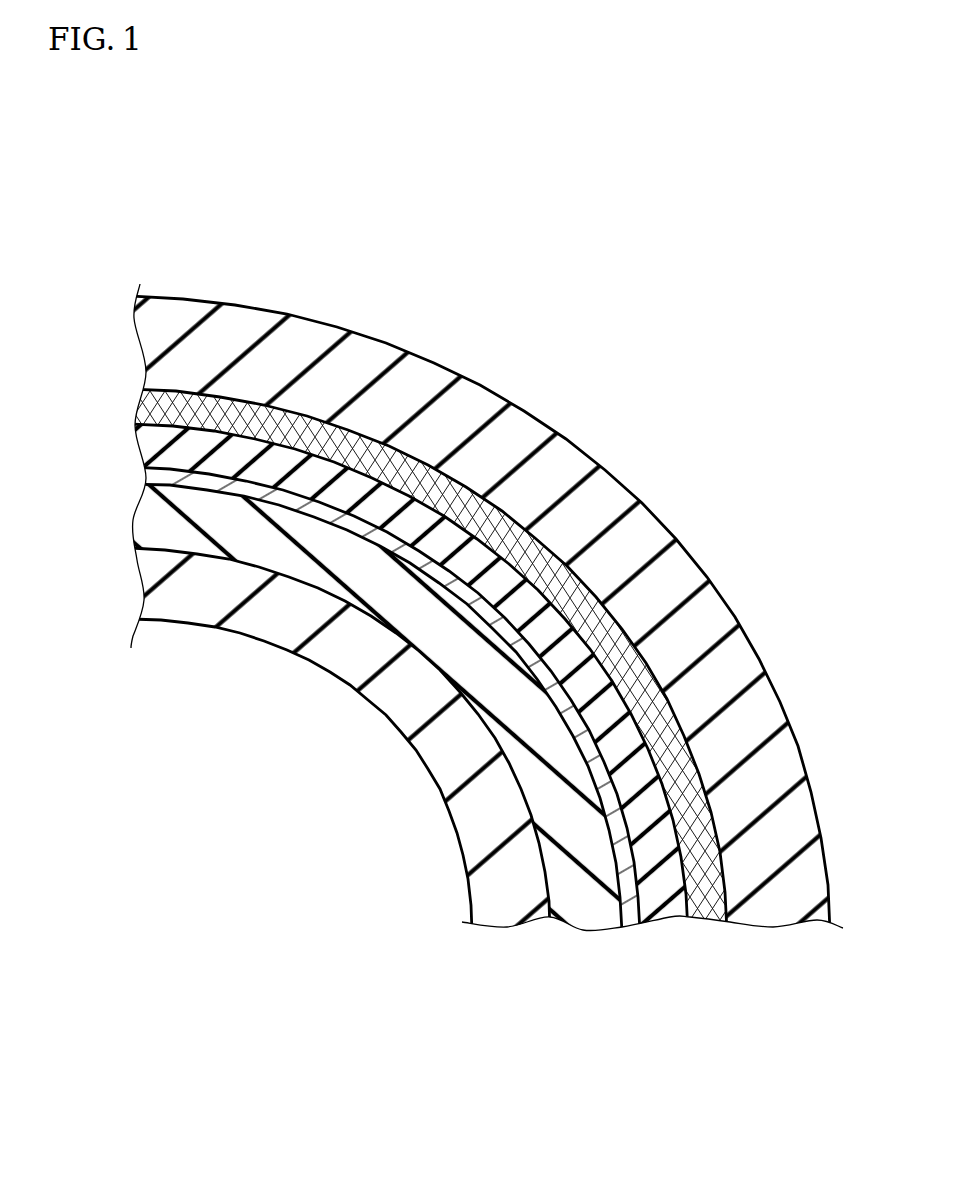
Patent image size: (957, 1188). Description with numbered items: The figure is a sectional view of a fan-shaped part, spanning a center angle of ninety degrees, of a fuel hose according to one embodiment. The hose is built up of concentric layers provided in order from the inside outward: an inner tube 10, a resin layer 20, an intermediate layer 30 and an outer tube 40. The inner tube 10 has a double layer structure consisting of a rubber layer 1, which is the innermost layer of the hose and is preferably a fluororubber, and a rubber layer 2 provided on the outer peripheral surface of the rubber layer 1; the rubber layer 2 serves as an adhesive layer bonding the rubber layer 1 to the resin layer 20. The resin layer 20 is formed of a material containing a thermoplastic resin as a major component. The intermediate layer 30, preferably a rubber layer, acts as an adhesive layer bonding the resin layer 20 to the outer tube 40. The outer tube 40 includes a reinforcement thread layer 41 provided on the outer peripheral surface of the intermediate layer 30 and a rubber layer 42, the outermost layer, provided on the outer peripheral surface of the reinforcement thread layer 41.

The rubber layer 1 is at (507, 913).
The rubber layer 2 is at (592, 910).
The inner tube 10 is at (376, 756).
The resin layer 20 is at (632, 918).
The intermediate layer 30 is at (668, 910).
The outer tube 40 is at (480, 654).
The reinforcement thread layer 41 is at (712, 905).
The rubber layer 42 is at (707, 971).